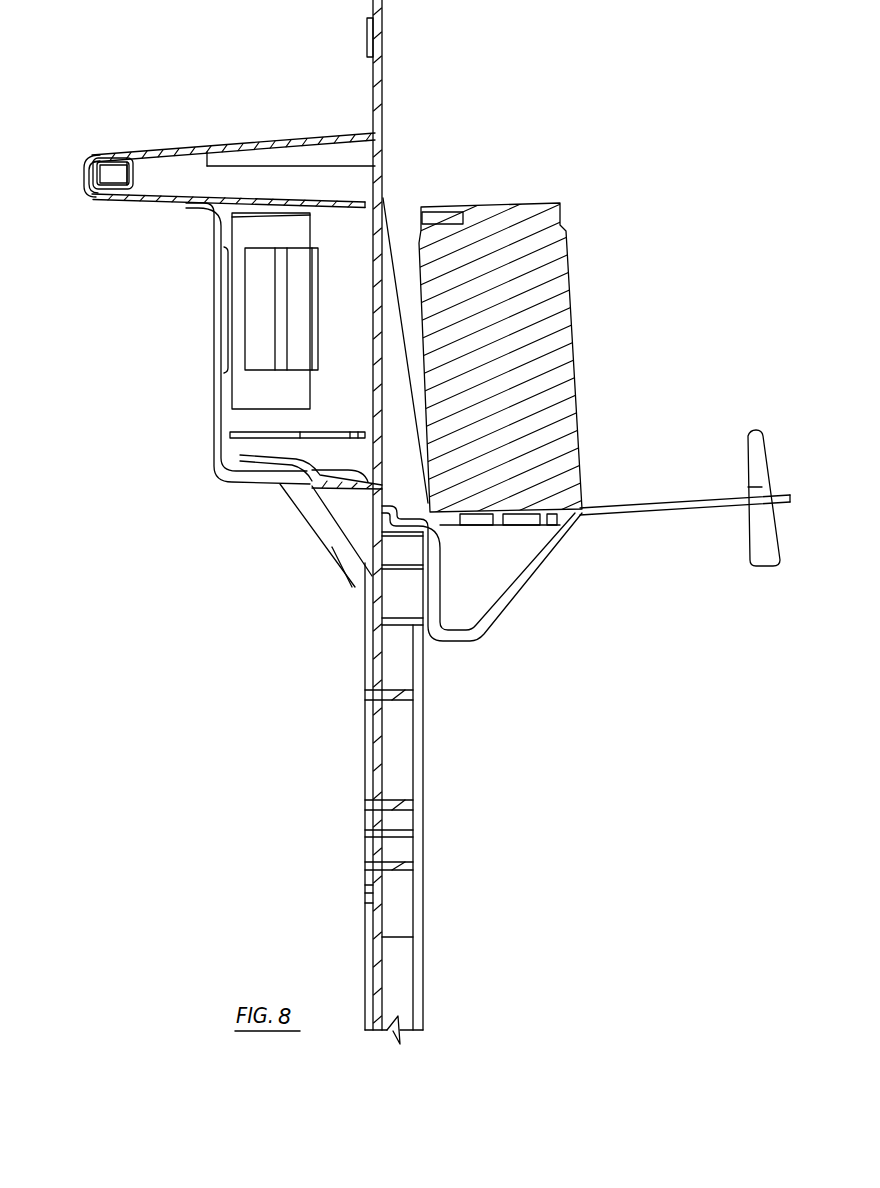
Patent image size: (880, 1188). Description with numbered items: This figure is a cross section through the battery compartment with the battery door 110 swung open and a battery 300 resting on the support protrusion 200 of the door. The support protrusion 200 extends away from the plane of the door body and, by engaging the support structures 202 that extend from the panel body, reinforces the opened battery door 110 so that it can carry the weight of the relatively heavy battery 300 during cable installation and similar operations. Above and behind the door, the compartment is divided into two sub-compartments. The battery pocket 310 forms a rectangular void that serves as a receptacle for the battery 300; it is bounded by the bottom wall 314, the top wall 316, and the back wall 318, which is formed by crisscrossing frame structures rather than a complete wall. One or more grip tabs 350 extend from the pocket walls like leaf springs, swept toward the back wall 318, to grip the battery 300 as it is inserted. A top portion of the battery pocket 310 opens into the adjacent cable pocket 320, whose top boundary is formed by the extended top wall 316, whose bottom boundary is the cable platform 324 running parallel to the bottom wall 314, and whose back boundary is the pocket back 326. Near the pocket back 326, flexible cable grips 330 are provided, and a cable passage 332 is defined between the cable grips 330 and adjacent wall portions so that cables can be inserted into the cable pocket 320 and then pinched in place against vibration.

The battery door 110 is at (604, 541).
The support protrusion 200 is at (492, 622).
The support structures 202 is at (401, 579).
The battery 300 is at (538, 205).
The battery pocket 310 is at (350, 259).
The bottom wall 314 is at (288, 483).
The top wall 316 is at (238, 143).
The back wall 318 is at (214, 338).
The cable pocket 320 is at (177, 172).
The cable platform 324 is at (157, 205).
The pocket back 326 is at (83, 178).
The cable grips 330 is at (118, 173).
The cable passage 332 is at (96, 157).
The grip tabs 350 is at (265, 347).